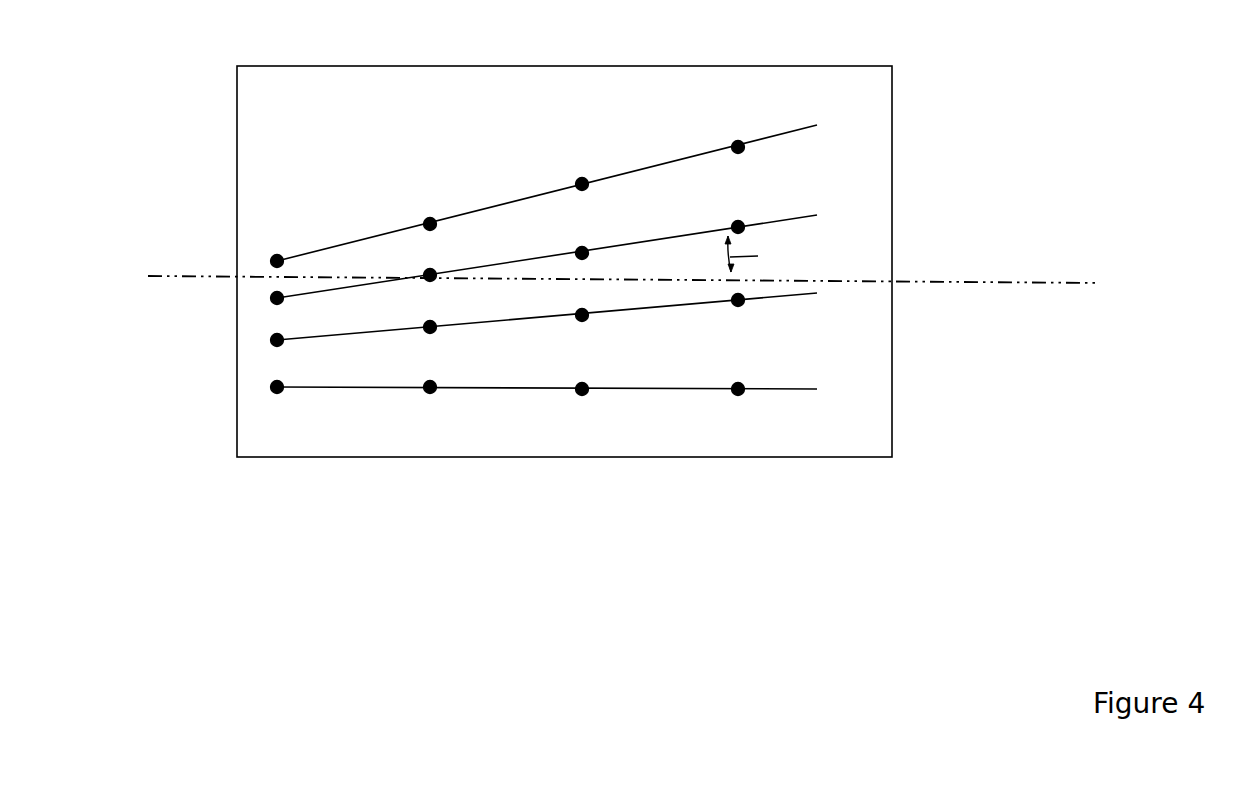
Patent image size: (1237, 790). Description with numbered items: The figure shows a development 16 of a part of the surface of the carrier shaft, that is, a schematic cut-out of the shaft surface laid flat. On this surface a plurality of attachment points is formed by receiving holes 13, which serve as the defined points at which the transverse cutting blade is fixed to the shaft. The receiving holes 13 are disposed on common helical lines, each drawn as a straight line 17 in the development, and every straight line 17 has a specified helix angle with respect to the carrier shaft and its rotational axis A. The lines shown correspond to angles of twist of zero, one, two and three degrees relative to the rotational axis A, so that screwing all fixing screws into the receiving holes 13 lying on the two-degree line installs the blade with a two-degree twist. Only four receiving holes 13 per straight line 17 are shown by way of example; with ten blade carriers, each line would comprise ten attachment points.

The development of a part of the surface of the carrier shaft 16 is at (647, 67).
The receiving hole 13 is at (279, 254).
The straight line 17 is at (826, 408).
The rotational axis A is at (172, 275).